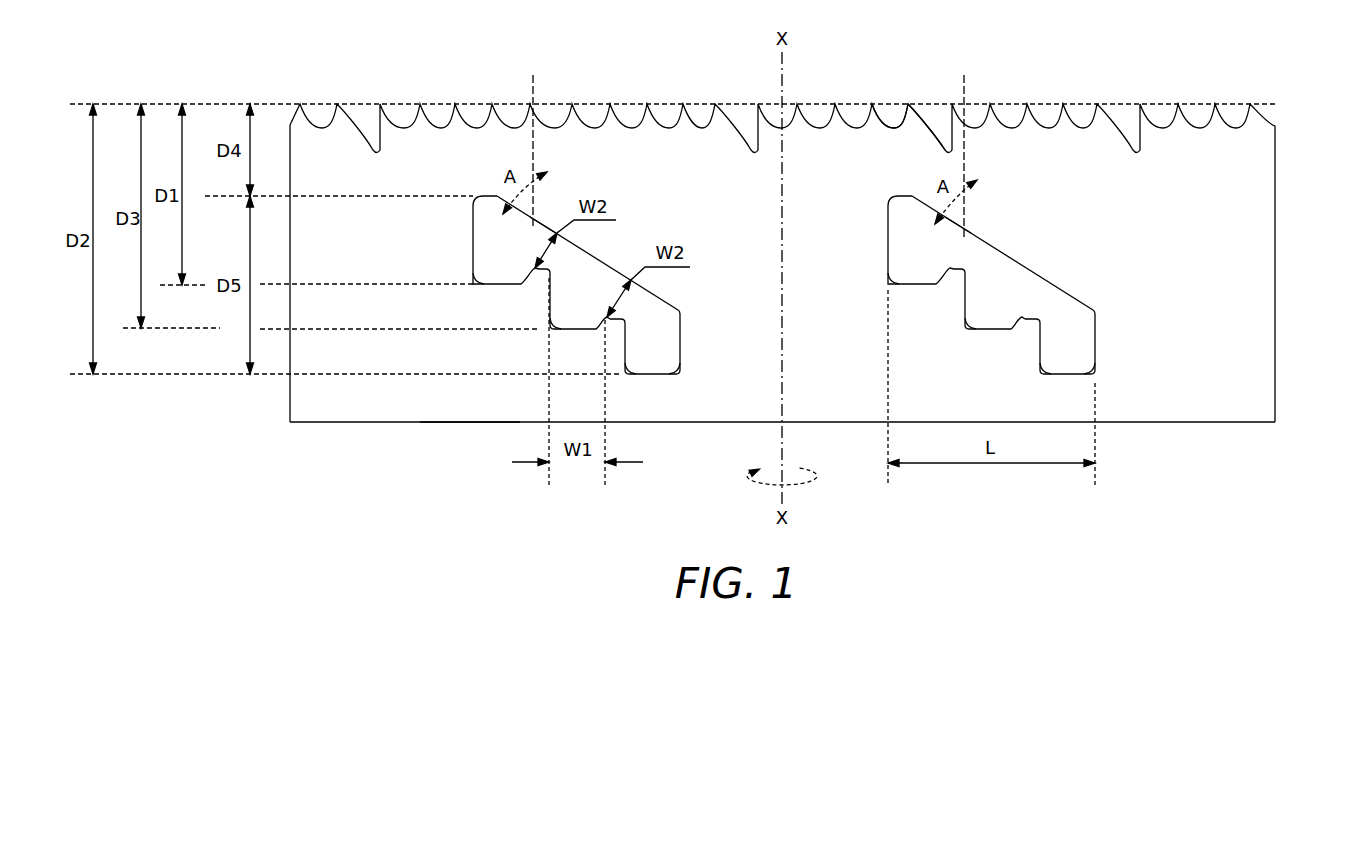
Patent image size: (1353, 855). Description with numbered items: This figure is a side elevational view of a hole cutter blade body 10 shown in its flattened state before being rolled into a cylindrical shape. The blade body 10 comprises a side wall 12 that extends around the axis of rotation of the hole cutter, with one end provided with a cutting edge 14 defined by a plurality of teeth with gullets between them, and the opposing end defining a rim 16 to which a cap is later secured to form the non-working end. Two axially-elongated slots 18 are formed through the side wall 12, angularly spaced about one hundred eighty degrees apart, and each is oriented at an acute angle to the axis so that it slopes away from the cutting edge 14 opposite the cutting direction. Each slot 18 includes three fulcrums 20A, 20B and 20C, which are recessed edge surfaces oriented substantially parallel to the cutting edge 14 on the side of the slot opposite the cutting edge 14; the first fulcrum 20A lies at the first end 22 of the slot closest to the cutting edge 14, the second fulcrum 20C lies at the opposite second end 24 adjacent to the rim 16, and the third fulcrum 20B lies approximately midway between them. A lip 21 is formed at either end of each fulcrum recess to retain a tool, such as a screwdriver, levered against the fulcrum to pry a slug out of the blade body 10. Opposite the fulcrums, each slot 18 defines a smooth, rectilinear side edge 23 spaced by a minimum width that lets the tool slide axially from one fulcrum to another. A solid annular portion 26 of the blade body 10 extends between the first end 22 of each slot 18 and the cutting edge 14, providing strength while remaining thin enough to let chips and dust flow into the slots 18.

The blade body 10 is at (1277, 150).
The side wall 12 is at (359, 412).
The cutting edge 14 is at (911, 106).
The rim 16 is at (465, 423).
The axially-elongated slot 18 is at (589, 255).
The first fulcrum 20A is at (503, 286).
The third fulcrum 20B is at (578, 328).
The second fulcrum 20C is at (653, 372).
The lip 21 is at (487, 286).
The first end 22 is at (495, 195).
The side edge 23 is at (543, 217).
The second end 24 is at (680, 310).
The annular portion 26 is at (541, 180).